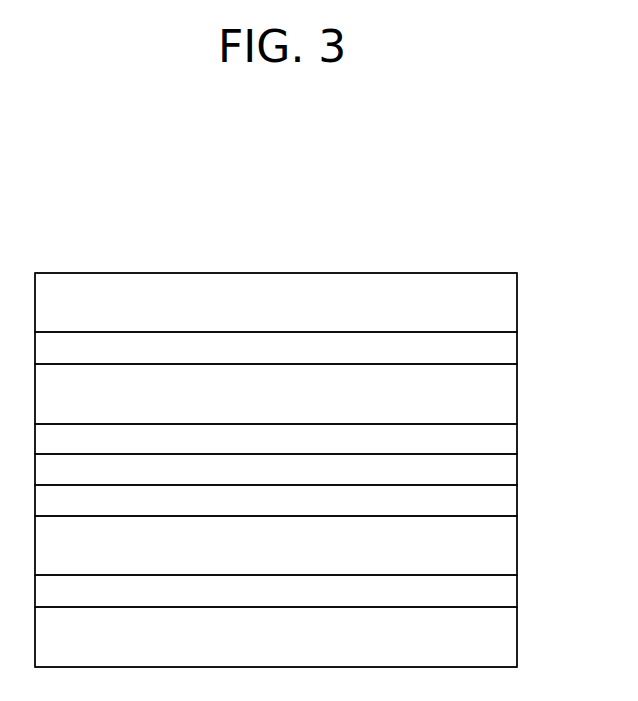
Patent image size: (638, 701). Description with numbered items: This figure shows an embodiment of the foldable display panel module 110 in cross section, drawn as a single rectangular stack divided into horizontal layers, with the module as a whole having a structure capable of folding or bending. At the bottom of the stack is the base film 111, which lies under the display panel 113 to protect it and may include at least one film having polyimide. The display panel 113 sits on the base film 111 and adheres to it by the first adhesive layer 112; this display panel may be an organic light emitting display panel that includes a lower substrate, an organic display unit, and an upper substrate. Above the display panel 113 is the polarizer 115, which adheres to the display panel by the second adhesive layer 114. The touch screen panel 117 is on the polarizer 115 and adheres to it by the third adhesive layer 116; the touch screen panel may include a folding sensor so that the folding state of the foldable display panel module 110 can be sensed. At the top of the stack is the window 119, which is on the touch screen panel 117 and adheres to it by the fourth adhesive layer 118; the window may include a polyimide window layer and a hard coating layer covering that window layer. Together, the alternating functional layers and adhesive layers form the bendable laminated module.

The foldable display panel module 110 is at (326, 228).
The base film 111 is at (507, 637).
The first adhesive layer 112 is at (507, 591).
The display panel 113 is at (507, 548).
The second adhesive layer 114 is at (507, 500).
The polarizer 115 is at (507, 472).
The third adhesive layer 116 is at (507, 439).
The touch screen panel 117 is at (507, 393).
The fourth adhesive layer 118 is at (507, 347).
The window 119 is at (507, 302).